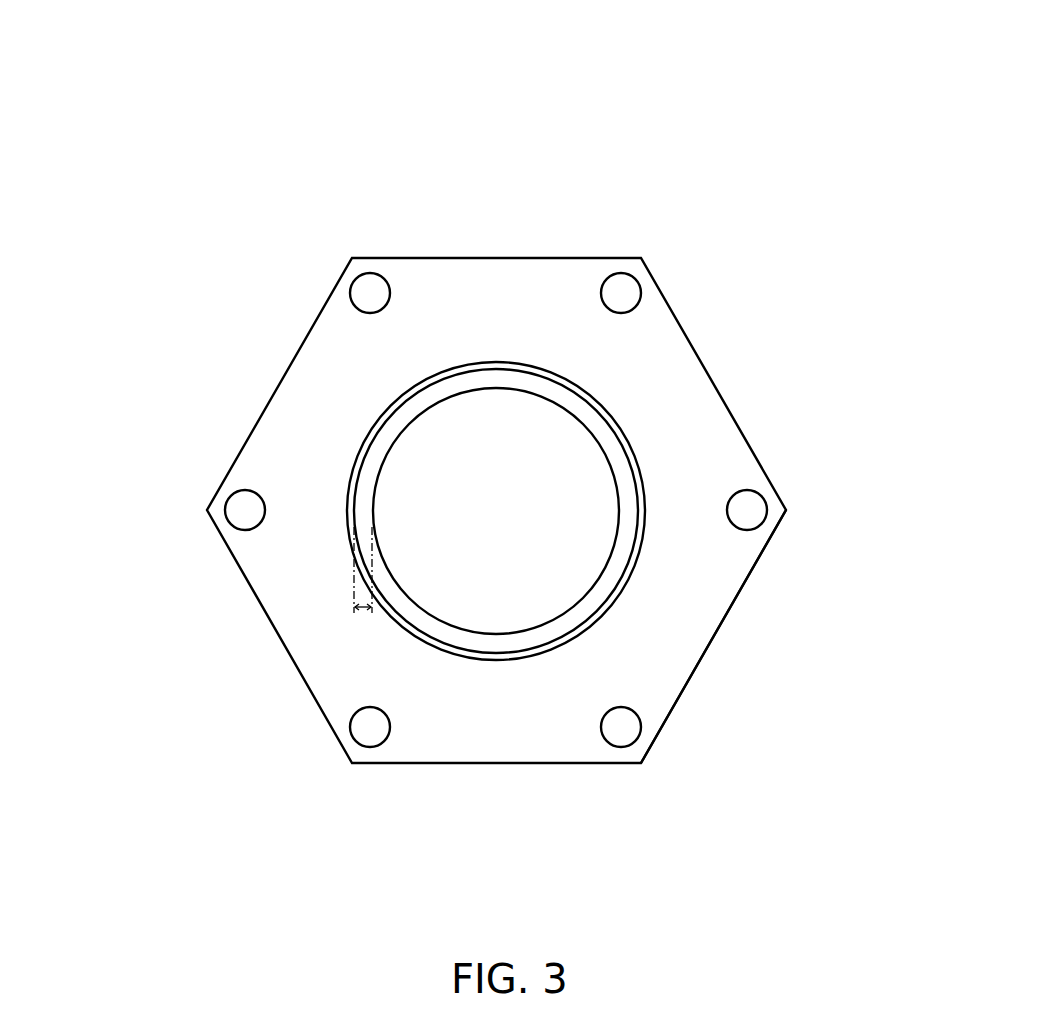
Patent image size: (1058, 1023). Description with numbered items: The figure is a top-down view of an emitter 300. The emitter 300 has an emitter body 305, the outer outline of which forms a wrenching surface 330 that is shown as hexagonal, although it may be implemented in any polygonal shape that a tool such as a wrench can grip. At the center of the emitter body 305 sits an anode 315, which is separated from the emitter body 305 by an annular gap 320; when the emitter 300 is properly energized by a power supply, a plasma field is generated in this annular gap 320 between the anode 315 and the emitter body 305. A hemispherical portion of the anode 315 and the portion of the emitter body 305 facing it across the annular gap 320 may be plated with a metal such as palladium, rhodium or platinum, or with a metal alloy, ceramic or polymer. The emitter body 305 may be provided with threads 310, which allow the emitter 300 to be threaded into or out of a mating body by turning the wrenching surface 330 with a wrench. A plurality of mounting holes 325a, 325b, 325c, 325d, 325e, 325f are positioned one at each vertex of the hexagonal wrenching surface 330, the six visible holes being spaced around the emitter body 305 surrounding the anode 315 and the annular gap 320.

The emitter 300 is at (233, 83).
The emitter body 305 is at (448, 258).
The threads 310 is at (388, 613).
The anode 315 is at (410, 448).
The annular gap 320 is at (365, 612).
The mounting hole 325a is at (357, 275).
The mounting hole 325b is at (633, 275).
The mounting hole 325c is at (767, 510).
The mounting hole 325d is at (627, 745).
The mounting hole 325e is at (365, 745).
The mounting hole 325f is at (224, 510).
The wrenching surface 330 is at (723, 625).